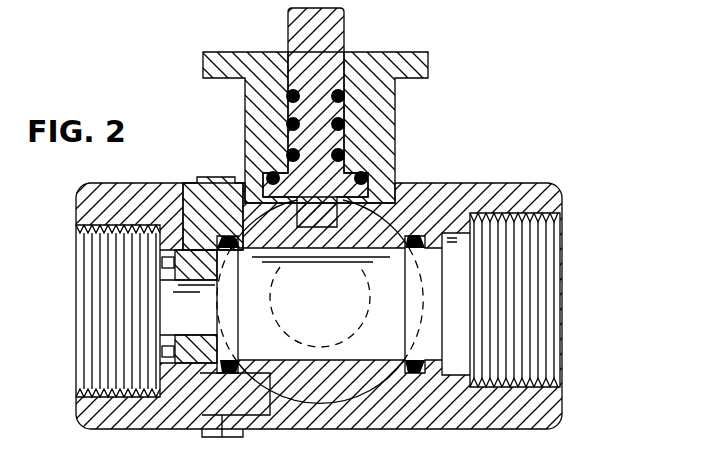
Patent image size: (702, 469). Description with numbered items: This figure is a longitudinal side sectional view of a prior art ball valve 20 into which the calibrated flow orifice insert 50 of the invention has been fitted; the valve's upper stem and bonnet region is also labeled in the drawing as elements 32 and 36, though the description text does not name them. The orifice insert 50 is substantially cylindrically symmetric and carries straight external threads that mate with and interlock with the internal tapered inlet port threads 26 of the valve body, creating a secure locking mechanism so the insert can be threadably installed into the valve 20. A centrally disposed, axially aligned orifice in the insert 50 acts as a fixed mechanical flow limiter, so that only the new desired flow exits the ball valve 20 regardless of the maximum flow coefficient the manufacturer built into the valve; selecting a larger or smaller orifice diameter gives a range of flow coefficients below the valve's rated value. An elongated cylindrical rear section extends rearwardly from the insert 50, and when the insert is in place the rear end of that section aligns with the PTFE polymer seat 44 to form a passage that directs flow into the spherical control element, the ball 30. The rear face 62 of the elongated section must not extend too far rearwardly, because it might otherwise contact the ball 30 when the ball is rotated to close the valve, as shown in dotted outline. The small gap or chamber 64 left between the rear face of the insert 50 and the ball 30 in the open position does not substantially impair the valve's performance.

The ball valve 20 is at (405, 151).
The inlet port threads 26 is at (108, 282).
The ball 30 is at (350, 396).
The stem 32 is at (306, 113).
The bonnet nut 36 is at (315, 101).
The PTFE polymer seat 44 is at (225, 362).
The orifice insert 50 is at (181, 248).
The rear face 62 is at (200, 281).
The gap or chamber 64 is at (228, 348).